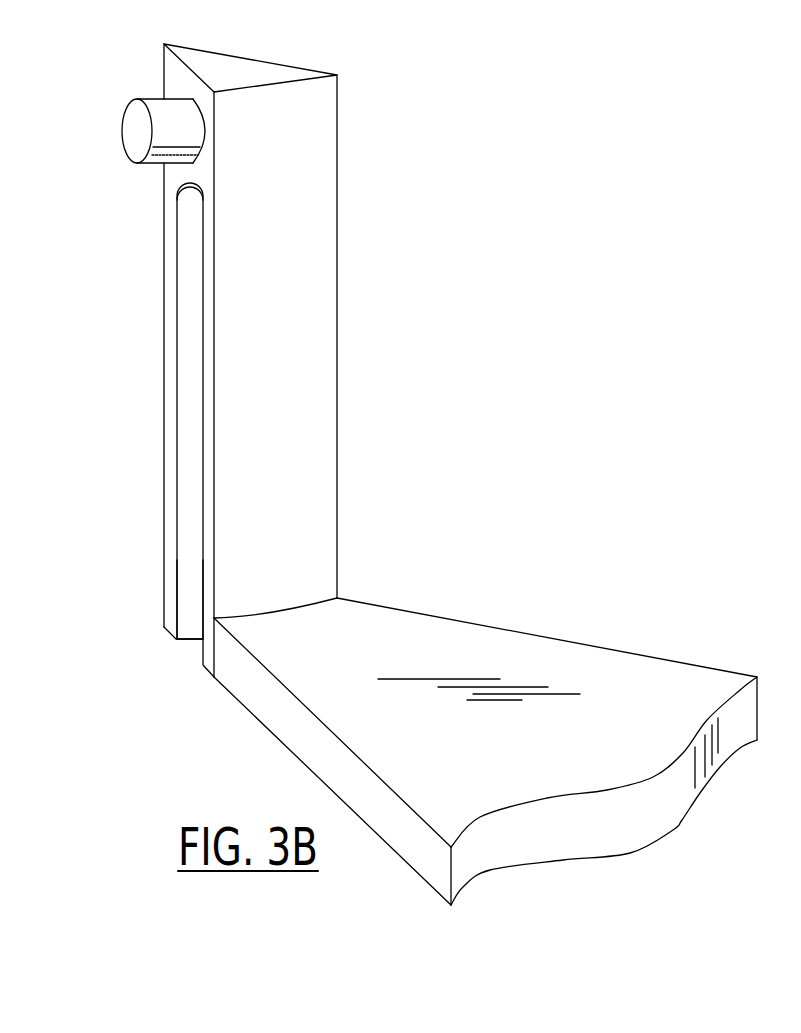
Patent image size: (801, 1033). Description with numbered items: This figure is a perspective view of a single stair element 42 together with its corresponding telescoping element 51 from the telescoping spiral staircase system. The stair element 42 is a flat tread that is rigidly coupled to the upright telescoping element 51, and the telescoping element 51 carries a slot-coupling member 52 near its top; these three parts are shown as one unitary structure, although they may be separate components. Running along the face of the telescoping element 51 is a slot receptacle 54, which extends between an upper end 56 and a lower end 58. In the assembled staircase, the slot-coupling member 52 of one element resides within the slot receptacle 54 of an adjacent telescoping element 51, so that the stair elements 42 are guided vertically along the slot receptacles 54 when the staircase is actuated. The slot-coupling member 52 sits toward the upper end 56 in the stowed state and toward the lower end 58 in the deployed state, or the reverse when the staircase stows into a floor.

The stair element 42 is at (453, 620).
The telescoping element 51 is at (338, 325).
The slot-coupling member 52 is at (150, 97).
The slot receptacle 54 is at (187, 350).
The upper end 56 is at (188, 200).
The lower end 58 is at (192, 564).